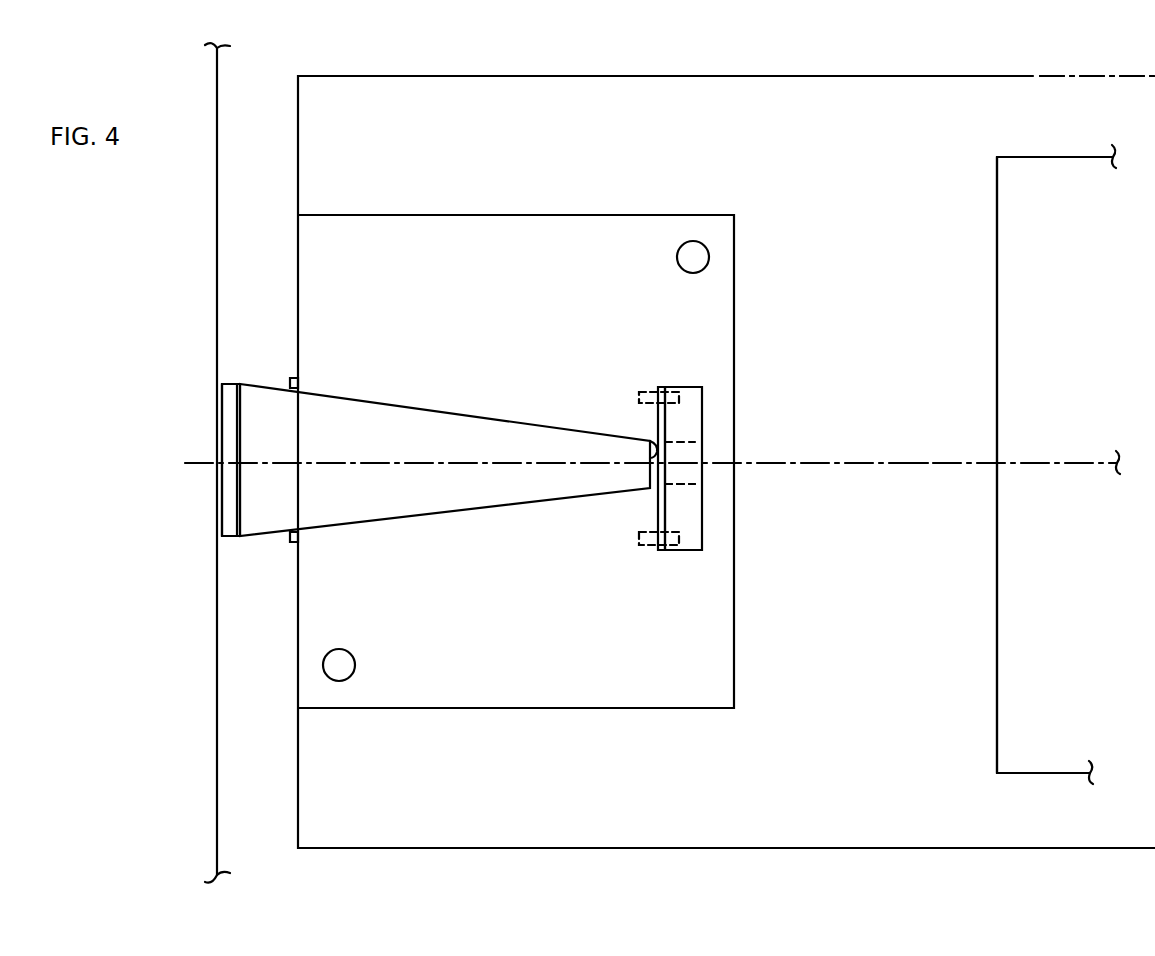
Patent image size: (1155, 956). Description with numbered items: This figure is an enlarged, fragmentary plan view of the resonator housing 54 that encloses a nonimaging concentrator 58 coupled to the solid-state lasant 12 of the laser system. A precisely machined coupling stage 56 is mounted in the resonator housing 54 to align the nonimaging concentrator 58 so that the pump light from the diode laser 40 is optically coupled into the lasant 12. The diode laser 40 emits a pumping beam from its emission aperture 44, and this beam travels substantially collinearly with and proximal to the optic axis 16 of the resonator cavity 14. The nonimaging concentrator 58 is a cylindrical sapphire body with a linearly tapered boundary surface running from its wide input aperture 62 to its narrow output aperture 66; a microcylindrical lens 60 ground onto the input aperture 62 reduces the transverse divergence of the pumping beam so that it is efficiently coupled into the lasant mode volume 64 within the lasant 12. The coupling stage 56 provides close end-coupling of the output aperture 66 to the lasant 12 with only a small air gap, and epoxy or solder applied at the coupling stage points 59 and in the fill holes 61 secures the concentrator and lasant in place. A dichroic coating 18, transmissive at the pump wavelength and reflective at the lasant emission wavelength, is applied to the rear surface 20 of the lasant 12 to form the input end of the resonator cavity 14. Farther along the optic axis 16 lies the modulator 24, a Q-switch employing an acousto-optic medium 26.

The solid-state lasant 12 is at (697, 413).
The resonator cavity 14 is at (905, 118).
The optic axis 16 is at (905, 467).
The dichroic coating 18 is at (667, 387).
The rear surface 20 is at (667, 515).
The modulator 24 is at (1057, 157).
The acousto-optic medium 26 is at (1018, 172).
The diode laser 40 is at (217, 225).
The emission aperture 44 is at (212, 463).
The resonator housing 54 is at (1015, 76).
The coupling stage 56 is at (600, 213).
The nonimaging concentrator 58 is at (450, 408).
The coupling stage points 59 is at (288, 385).
The microcylindrical lens 60 is at (218, 408).
The fill holes 61 is at (648, 392).
The input aperture 62 is at (233, 497).
The lasant mode volume 64 is at (688, 470).
The output aperture 66 is at (655, 445).